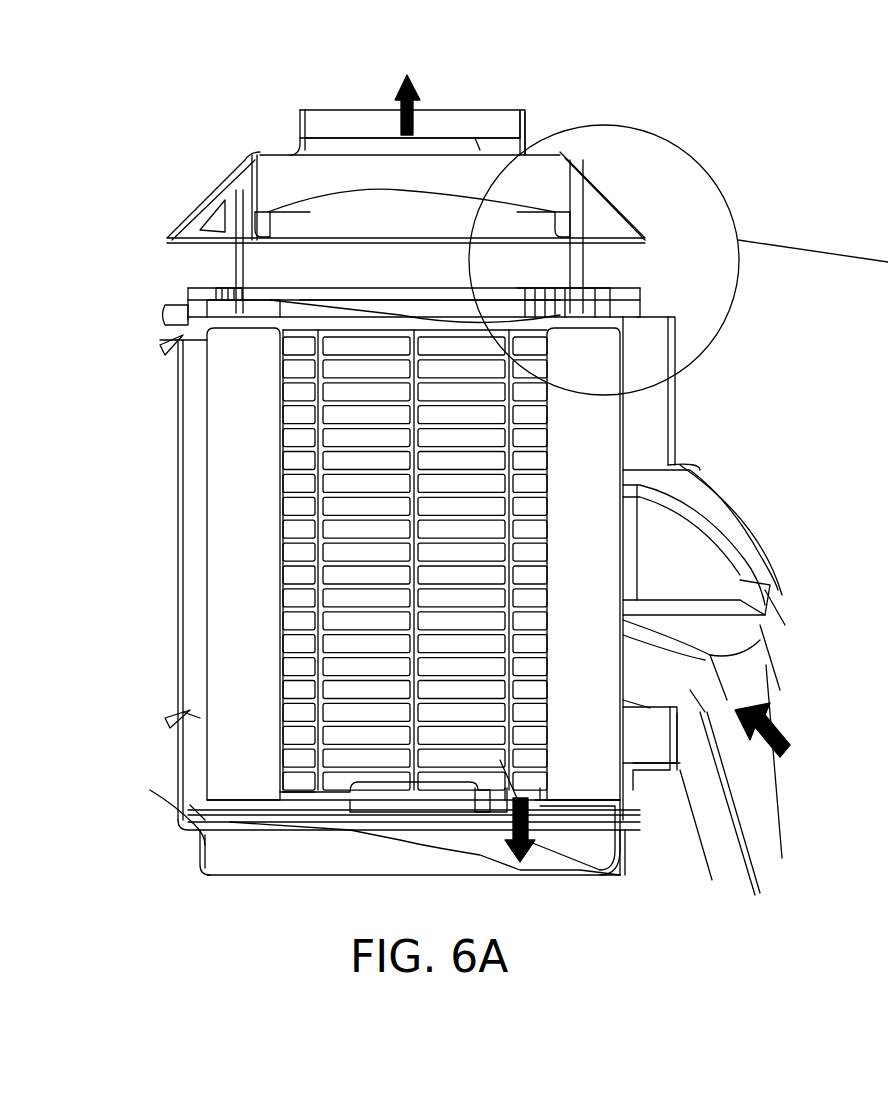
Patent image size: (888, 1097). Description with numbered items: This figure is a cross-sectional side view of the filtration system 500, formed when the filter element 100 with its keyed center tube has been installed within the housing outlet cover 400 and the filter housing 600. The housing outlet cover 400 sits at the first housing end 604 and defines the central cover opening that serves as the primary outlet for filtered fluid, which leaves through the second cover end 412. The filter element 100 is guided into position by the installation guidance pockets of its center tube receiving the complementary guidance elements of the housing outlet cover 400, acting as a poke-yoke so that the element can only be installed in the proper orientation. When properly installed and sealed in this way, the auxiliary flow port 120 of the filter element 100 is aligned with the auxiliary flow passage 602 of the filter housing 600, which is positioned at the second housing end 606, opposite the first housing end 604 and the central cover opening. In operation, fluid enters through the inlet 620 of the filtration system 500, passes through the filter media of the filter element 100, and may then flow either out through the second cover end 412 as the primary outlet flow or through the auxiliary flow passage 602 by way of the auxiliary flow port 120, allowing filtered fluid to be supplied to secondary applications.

The filtration system 500 is at (200, 116).
The first housing end 604 is at (300, 110).
The second cover end 412 is at (490, 118).
The housing outlet cover 400 is at (193, 212).
The filter element 100 is at (202, 437).
The auxiliary flow port 120 is at (540, 805).
The filter housing 600 is at (177, 660).
The second housing end 606 is at (205, 826).
The auxiliary flow passage 602 is at (540, 843).
The inlet 620 is at (790, 745).